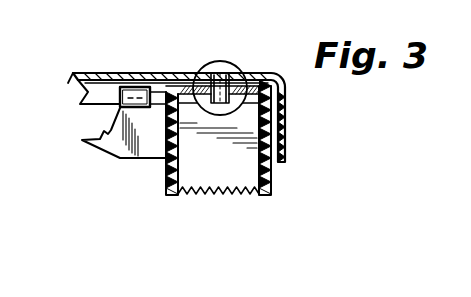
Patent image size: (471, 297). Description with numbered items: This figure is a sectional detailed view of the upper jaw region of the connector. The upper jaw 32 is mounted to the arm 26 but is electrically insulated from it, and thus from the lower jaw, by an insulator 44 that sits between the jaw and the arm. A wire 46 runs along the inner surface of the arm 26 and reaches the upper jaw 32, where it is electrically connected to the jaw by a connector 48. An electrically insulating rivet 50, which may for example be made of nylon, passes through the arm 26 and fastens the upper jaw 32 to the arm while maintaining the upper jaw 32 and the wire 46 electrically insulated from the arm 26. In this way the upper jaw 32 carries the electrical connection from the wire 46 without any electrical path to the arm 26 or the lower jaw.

The arm 26 is at (119, 72).
The upper jaw 32 is at (226, 174).
The insulator 44 is at (165, 174).
The wire 46 is at (84, 98).
The connector 48 is at (95, 149).
The electrically insulating rivet 50 is at (228, 62).